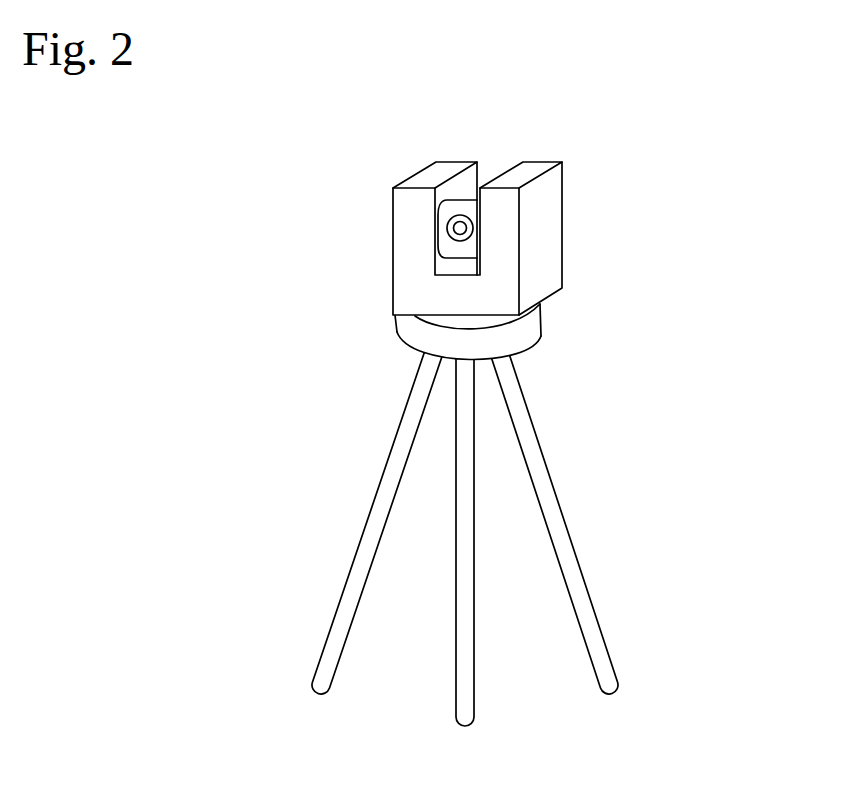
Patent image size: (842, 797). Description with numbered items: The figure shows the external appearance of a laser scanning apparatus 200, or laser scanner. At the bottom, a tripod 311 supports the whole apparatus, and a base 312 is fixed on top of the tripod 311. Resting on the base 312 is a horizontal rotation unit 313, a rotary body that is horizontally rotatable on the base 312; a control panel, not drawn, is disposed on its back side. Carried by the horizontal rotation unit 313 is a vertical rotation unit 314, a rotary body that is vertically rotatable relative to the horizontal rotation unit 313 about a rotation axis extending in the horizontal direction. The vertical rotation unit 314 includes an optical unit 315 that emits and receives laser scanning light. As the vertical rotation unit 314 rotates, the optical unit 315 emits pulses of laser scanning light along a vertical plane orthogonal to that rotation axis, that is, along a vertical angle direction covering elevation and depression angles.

The laser scanning apparatus 200 is at (512, 439).
The tripod 311 is at (547, 465).
The base 312 is at (545, 323).
The horizontal rotation unit 313 is at (480, 238).
The vertical rotation unit 314 is at (450, 245).
The optical unit 315 is at (440, 236).